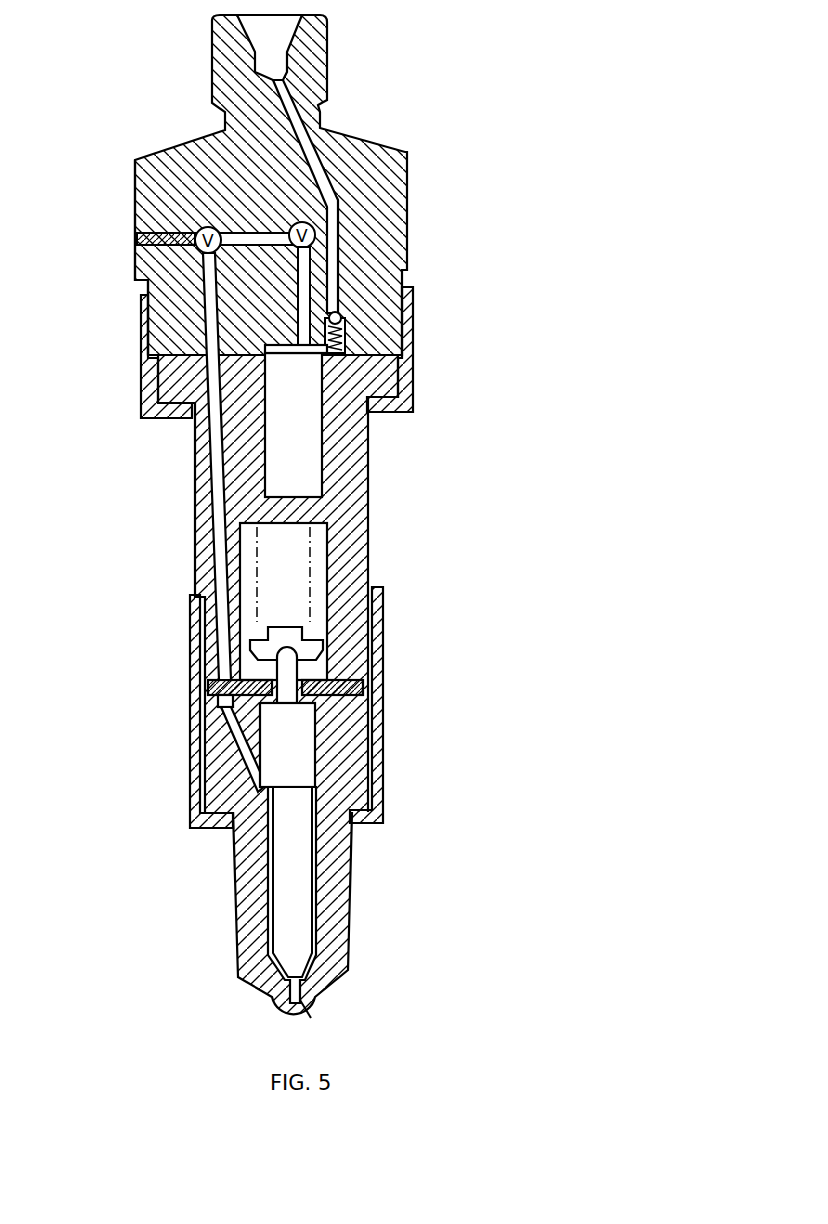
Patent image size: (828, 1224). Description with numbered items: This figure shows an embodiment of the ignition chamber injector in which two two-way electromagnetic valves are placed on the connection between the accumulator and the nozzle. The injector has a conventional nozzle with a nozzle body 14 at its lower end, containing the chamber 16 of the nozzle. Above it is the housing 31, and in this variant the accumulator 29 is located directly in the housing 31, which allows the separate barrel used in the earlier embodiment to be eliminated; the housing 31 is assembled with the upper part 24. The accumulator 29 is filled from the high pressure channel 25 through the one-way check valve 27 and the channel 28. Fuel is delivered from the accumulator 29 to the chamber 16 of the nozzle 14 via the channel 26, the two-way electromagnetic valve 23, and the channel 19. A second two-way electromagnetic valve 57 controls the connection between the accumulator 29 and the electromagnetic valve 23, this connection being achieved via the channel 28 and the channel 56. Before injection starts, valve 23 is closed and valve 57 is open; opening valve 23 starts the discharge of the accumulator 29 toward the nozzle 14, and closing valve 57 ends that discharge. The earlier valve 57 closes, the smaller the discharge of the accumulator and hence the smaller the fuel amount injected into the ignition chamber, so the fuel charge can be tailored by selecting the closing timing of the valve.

The nozzle body 14 is at (247, 903).
The chamber of the nozzle 16 is at (262, 790).
The channel 19 is at (222, 491).
The 2-way electromagnetic valve 23 is at (192, 157).
The upper part 24 is at (150, 215).
The high pressure channel 25 is at (307, 150).
The channel 26 is at (303, 278).
The one-way check valve 27 is at (340, 316).
The channel 28 is at (280, 351).
The accumulator 29 is at (297, 437).
The housing 31 is at (355, 543).
The channel 56 is at (195, 250).
The 2-way electromagnetic valve 57 is at (200, 192).